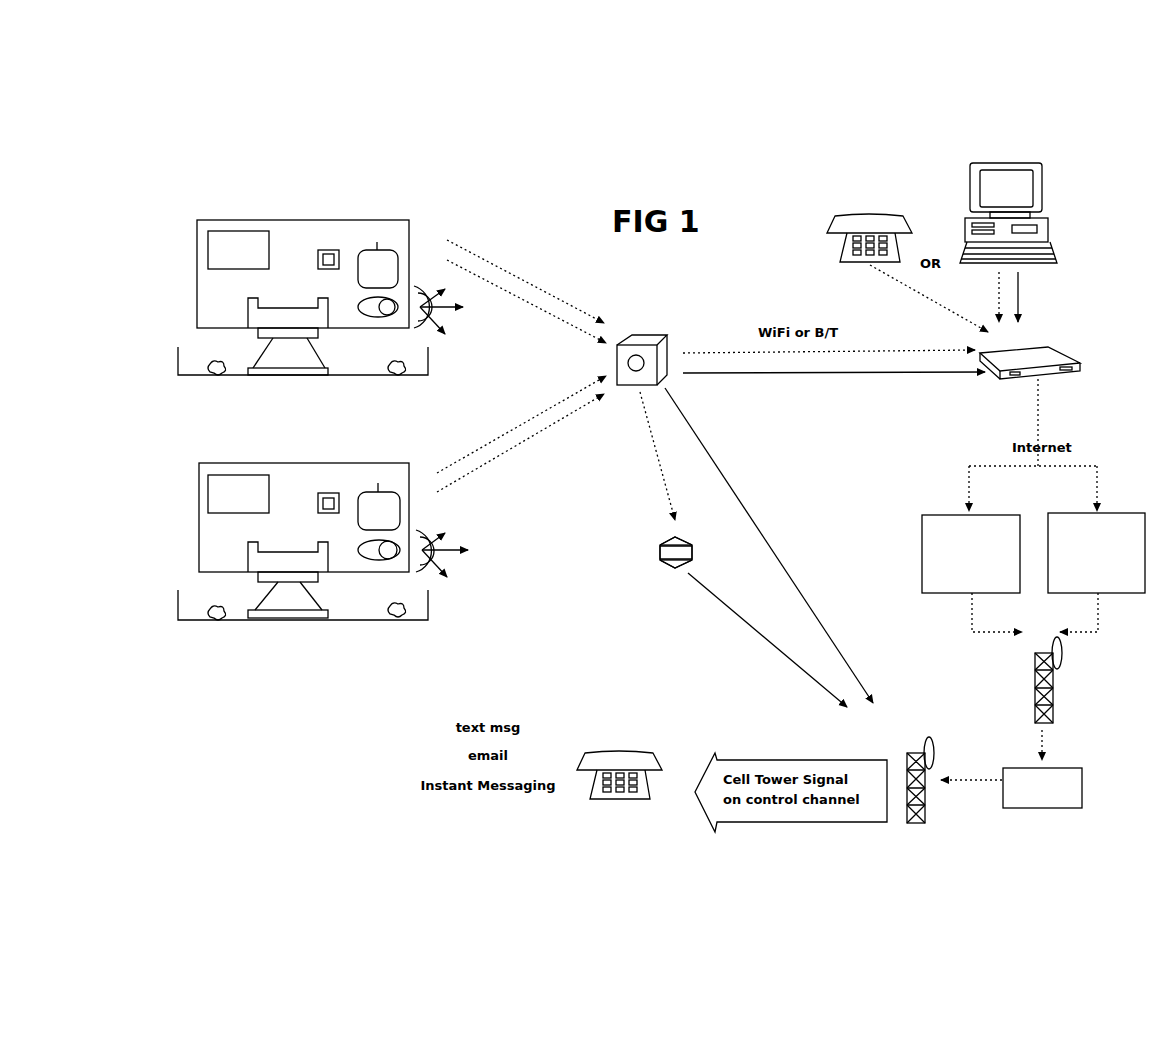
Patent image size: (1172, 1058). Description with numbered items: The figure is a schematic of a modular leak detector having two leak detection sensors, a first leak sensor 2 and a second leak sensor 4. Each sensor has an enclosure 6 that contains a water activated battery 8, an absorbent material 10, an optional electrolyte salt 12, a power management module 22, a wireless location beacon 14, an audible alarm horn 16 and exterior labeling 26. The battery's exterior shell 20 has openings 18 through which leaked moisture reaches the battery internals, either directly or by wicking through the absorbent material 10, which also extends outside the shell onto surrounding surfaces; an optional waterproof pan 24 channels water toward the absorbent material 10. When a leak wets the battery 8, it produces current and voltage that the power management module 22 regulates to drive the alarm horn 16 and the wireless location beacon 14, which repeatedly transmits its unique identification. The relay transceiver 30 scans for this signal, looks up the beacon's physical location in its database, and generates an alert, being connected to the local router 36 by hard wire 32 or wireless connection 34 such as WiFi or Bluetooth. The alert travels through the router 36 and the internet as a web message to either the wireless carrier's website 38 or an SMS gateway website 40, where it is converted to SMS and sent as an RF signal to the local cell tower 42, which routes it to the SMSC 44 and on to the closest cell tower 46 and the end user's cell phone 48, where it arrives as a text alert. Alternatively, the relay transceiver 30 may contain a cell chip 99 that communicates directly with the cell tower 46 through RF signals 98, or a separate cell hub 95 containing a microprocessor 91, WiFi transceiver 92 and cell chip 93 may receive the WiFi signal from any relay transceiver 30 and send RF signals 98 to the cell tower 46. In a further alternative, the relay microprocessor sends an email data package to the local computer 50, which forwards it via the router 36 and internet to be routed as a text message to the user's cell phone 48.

The first leak sensor 2 is at (431, 191).
The second leak sensor 4 is at (206, 647).
The enclosure 6 is at (306, 247).
The water activated battery 8 is at (319, 503).
The absorbent material 10 is at (290, 603).
The electrolyte salt 12 is at (403, 610).
The wireless location beacon 14 is at (383, 505).
The audible alarm horn 16 is at (388, 547).
The openings 18 is at (267, 335).
The exterior shell 20 is at (253, 320).
The power management module 22 is at (328, 250).
The waterproof pan 24 is at (378, 375).
The exterior labeling 26 is at (269, 245).
The relay transceiver 30 is at (648, 322).
The hard wire 32 is at (810, 372).
The wireless connection 34 is at (712, 353).
The local router 36 is at (1010, 380).
The wireless carrier's website 38 is at (938, 513).
The SMS gateway website 40 is at (1113, 513).
The local cell tower 42 is at (1035, 678).
The SMSC 44 is at (1082, 780).
The cell tower 46 is at (925, 753).
The cell phone 48 is at (865, 215).
The local computer 50 is at (998, 163).
The microprocessor 91 is at (677, 570).
The WiFi transceiver 92 is at (660, 557).
The cell chip 93 is at (673, 538).
The cell hub 95 is at (693, 545).
The RF signals 98 is at (787, 567).
The cell chip 99 is at (635, 353).